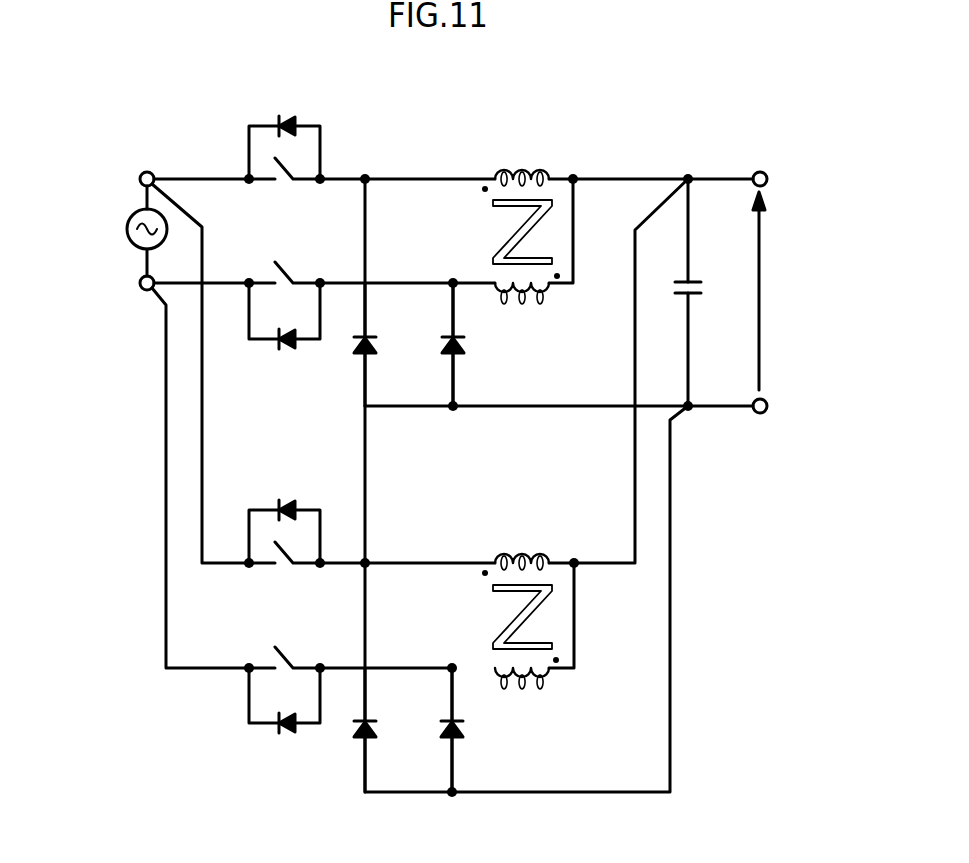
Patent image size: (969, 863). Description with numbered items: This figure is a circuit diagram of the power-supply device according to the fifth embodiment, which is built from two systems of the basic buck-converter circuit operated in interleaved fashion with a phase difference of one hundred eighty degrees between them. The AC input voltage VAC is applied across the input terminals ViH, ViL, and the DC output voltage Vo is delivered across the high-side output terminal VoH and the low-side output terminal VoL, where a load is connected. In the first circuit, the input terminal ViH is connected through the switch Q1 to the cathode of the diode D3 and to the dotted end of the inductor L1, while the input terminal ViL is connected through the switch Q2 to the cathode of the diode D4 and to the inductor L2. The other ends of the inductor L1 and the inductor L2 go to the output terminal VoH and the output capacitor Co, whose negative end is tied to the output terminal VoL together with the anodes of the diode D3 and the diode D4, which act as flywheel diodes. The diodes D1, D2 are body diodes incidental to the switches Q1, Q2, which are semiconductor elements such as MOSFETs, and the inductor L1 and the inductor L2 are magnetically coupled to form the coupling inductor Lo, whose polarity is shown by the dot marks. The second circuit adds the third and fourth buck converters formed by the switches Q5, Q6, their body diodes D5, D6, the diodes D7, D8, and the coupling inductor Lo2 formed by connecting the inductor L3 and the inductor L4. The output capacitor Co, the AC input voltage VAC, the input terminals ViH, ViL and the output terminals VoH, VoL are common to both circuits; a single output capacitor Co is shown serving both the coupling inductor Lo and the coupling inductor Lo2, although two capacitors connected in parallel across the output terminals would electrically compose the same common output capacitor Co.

The input terminal ViH is at (141, 172).
The input terminal ViL is at (140, 291).
The AC input voltage VAC is at (129, 221).
The output terminal VoH is at (767, 175).
The output terminal VoL is at (767, 402).
The DC output voltage Vo is at (776, 291).
The switch Q1 is at (291, 172).
The switch Q2 is at (277, 268).
The switch Q5 is at (293, 555).
The switch Q6 is at (277, 654).
The diode D1 is at (288, 124).
The diode D2 is at (278, 348).
The diode D3 is at (360, 357).
The diode D4 is at (450, 357).
The diode D5 is at (288, 508).
The diode D6 is at (278, 733).
The diode D7 is at (360, 742).
The diode D8 is at (450, 742).
The inductor L1 is at (517, 172).
The inductor L2 is at (528, 296).
The inductor L3 is at (517, 556).
The inductor L4 is at (528, 680).
The coupling inductor Lo is at (476, 249).
The coupling inductor Lo2 is at (492, 632).
The output capacitor Co is at (698, 277).